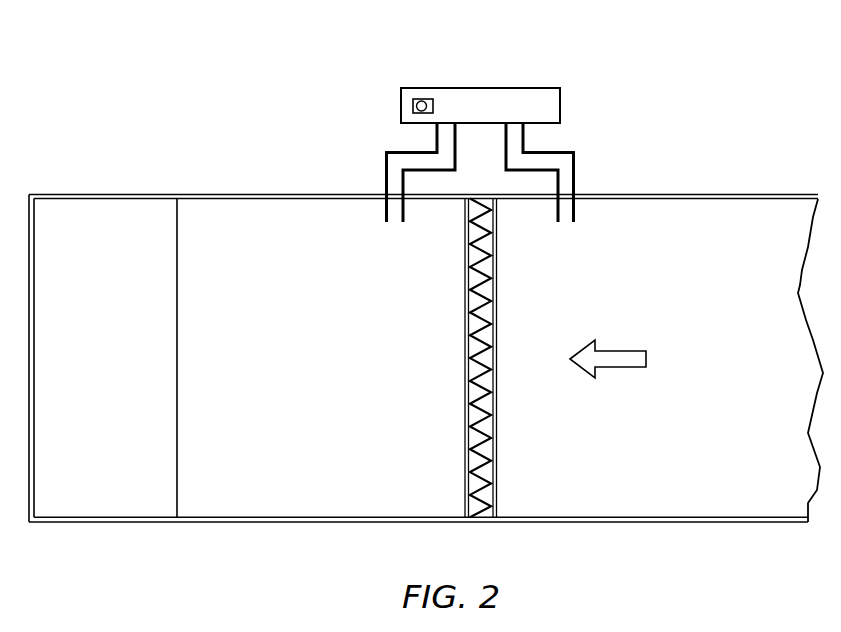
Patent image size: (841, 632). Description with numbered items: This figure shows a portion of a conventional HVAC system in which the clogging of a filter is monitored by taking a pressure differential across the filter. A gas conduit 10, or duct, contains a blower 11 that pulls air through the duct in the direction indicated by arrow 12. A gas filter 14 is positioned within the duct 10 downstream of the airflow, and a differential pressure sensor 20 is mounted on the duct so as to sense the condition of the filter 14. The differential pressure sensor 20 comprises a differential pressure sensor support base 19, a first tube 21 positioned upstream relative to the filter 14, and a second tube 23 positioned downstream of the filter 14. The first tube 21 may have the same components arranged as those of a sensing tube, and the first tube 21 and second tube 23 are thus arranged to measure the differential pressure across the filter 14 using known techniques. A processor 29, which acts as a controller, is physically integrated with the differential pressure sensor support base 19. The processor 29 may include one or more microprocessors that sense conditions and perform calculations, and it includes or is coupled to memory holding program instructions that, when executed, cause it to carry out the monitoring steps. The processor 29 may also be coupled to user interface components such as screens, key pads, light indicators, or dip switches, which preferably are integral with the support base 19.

The gas conduit 10 is at (709, 166).
The blower 11 is at (112, 358).
The arrow 12 is at (637, 368).
The gas filter 14 is at (492, 483).
The differential pressure sensor support base 19 is at (425, 87).
The differential pressure sensor 20 is at (577, 89).
The first tube 21 is at (577, 160).
The second tube 23 is at (385, 163).
The processor 29 is at (412, 106).